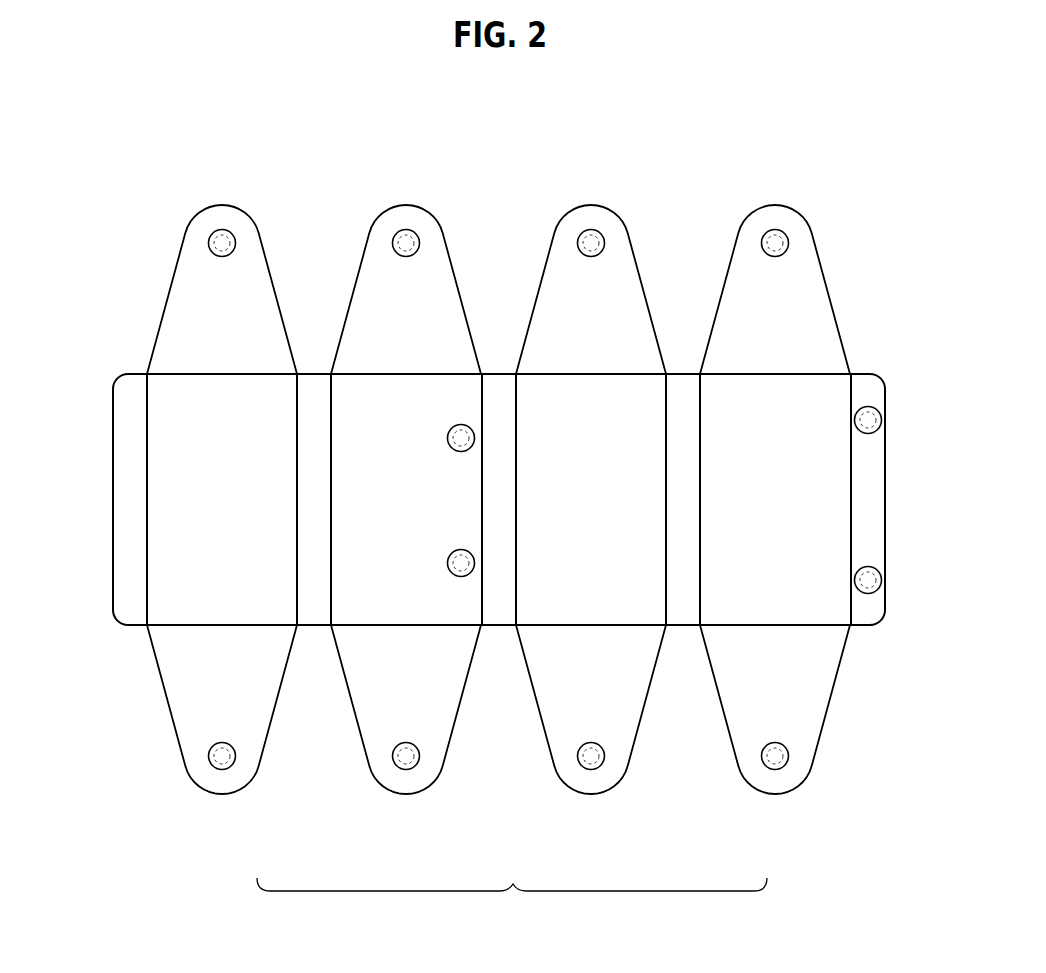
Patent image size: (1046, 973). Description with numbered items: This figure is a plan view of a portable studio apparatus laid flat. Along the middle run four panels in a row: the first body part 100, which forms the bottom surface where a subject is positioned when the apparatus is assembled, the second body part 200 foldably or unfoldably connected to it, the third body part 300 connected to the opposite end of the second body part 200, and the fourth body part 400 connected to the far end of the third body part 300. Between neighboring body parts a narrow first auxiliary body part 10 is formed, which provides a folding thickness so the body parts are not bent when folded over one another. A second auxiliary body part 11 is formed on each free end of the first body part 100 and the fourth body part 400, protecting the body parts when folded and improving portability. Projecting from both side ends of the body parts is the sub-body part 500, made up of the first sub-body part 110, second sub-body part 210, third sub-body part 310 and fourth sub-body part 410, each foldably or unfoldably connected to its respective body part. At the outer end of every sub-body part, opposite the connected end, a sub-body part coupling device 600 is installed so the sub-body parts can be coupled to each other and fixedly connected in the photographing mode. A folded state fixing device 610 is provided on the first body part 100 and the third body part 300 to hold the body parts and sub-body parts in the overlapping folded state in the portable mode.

The first auxiliary body part 10 is at (308, 390).
The second auxiliary body part 11 is at (128, 510).
The first body part 100 is at (822, 610).
The first sub-body part 110 is at (775, 205).
The second body part 200 is at (628, 610).
The second sub-body part 210 is at (591, 205).
The third body part 300 is at (439, 610).
The third sub-body part 310 is at (407, 205).
The fourth body part 400 is at (168, 400).
The fourth sub-body part 410 is at (223, 205).
The sub-body part 500 is at (512, 901).
The sub-body part coupling device 600 is at (208, 238).
The folded state fixing device 610 is at (868, 406).